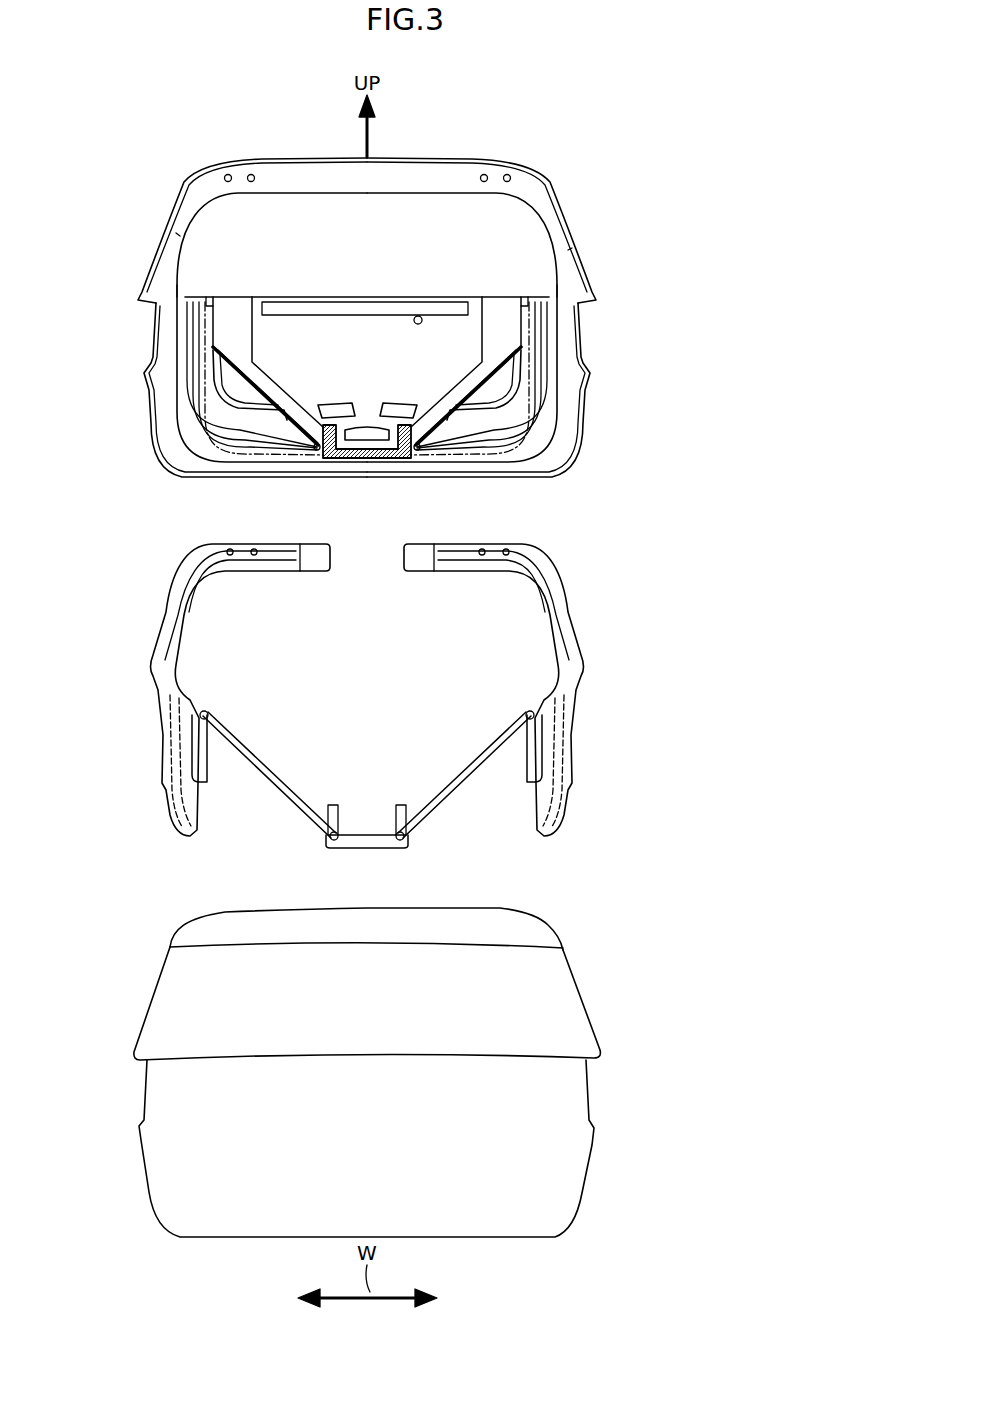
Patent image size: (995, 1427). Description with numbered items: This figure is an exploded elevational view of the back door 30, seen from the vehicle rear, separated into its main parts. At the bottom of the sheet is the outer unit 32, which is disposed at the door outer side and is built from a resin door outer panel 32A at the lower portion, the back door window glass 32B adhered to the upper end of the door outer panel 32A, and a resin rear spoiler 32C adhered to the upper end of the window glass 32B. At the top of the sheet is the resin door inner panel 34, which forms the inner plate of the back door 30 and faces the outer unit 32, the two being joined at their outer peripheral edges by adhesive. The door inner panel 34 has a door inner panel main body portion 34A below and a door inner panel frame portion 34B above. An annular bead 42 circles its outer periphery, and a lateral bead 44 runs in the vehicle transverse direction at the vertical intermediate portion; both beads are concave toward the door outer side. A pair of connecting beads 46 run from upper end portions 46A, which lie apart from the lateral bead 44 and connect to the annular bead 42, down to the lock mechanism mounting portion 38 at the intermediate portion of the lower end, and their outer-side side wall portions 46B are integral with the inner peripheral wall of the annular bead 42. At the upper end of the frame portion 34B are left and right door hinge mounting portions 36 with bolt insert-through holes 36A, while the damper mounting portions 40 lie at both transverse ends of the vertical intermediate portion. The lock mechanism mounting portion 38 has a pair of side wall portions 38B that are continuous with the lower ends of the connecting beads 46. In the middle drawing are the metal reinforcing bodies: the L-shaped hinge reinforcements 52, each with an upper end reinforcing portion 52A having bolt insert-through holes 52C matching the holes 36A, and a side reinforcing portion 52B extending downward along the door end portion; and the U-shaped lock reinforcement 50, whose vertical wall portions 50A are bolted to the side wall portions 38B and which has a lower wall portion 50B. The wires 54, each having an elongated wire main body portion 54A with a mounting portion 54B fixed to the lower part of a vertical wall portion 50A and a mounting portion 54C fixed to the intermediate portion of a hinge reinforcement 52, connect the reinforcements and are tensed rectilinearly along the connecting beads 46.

The back door 30 is at (692, 148).
The outer unit 32 is at (637, 1027).
The door outer panel 32A is at (560, 1175).
The back door window glass 32B is at (560, 1000).
The rear spoiler 32C is at (540, 937).
The door inner panel 34 is at (642, 265).
The door inner panel main body portion 34A is at (578, 382).
The door inner panel frame portion 34B is at (556, 216).
The door hinge mounting portions 36 is at (208, 172).
The bolt insert-through holes 36A is at (251, 175).
The lock mechanism mounting portion 38 is at (378, 441).
The side wall portions 38B is at (315, 450).
The damper mounting portions 40 is at (176, 233).
The annular bead 42 is at (180, 453).
The lateral bead 44 is at (372, 300).
The connecting beads 46 is at (277, 374).
The upper end portions 46A is at (262, 310).
The outer-side side wall portions 46B is at (236, 300).
The lock reinforcement 50 is at (354, 842).
The vertical wall portions 50A is at (336, 806).
The lower wall portion 50B is at (380, 850).
The hinge reinforcements 52 is at (160, 603).
The upper end reinforcing portions 52A is at (215, 549).
The side reinforcing portions 52B is at (165, 683).
The bolt insert-through holes 52C is at (230, 549).
The wires 54 is at (245, 720).
The wire main body portion 54A is at (255, 745).
The mounting portion 54B is at (330, 845).
The mounting portion 54C is at (210, 745).